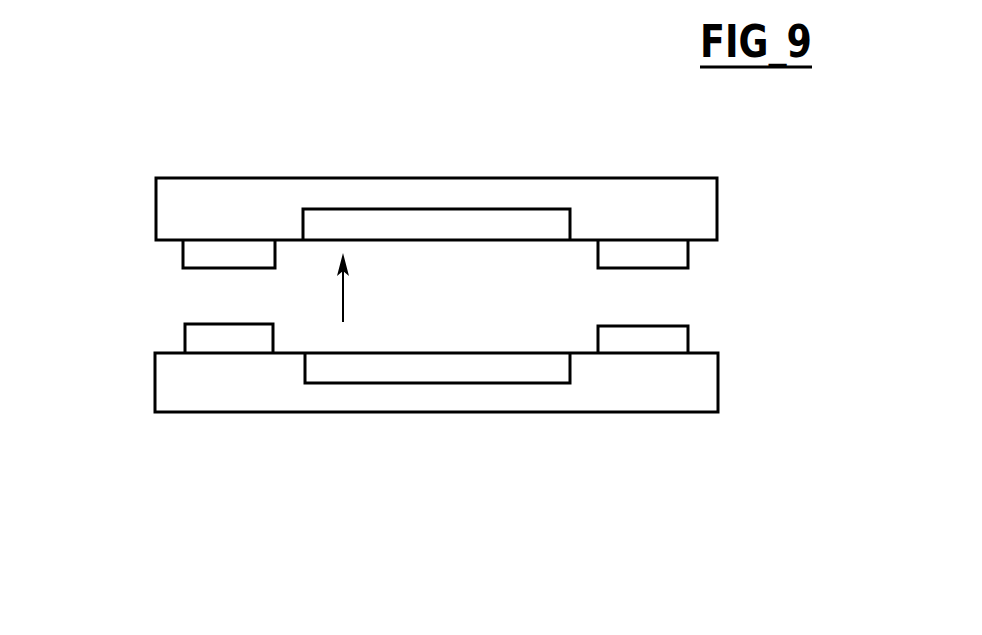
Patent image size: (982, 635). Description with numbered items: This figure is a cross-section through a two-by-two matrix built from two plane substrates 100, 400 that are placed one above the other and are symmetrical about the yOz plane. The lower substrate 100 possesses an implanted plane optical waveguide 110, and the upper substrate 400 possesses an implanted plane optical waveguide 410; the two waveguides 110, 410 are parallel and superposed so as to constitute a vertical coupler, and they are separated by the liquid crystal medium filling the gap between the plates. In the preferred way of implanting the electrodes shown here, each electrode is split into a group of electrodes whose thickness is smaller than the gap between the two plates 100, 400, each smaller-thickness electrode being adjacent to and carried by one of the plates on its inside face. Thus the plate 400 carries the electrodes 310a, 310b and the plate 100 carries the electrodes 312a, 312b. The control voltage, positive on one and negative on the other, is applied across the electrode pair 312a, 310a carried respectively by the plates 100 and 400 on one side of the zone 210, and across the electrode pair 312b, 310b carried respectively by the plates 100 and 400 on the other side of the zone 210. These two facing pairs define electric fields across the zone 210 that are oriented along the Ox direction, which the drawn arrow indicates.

The plane substrate 400 is at (693, 207).
The implanted plane optical waveguide 410 is at (453, 225).
The electrode 310a is at (200, 255).
The electrode 310b is at (668, 257).
The plane substrate 100 is at (688, 388).
The implanted plane optical waveguide 110 is at (457, 370).
The electrode 312a is at (200, 338).
The electrode 312b is at (670, 340).
The zone 210 is at (387, 291).